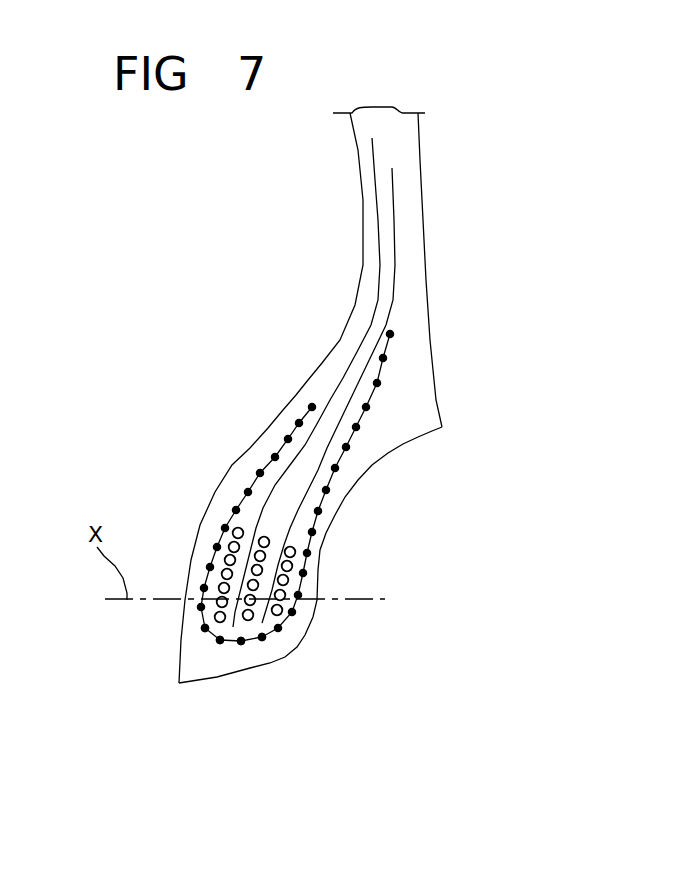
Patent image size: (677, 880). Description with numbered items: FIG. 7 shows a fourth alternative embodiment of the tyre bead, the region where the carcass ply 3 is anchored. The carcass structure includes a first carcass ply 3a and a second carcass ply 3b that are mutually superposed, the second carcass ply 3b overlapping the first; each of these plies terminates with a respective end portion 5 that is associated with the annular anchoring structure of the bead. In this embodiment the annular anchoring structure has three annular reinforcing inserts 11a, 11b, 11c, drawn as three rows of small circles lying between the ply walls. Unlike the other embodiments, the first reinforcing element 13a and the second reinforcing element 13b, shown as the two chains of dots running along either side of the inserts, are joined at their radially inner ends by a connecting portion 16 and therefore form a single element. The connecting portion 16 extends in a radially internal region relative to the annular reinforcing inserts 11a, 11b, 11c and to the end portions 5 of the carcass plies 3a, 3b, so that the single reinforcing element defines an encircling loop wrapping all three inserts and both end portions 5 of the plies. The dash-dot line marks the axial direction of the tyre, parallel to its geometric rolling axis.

The carcass ply 3 is at (375, 395).
The first carcass ply 3a is at (300, 258).
The second carcass ply 3b is at (457, 271).
The end portion 5 is at (296, 501).
The first reinforcing element 13a is at (212, 509).
The second reinforcing element 13b is at (403, 487).
The annular reinforcing insert 11a is at (169, 631).
The annular reinforcing insert 11b is at (295, 656).
The annular reinforcing insert 11c is at (348, 630).
The connecting portion 16 is at (233, 698).